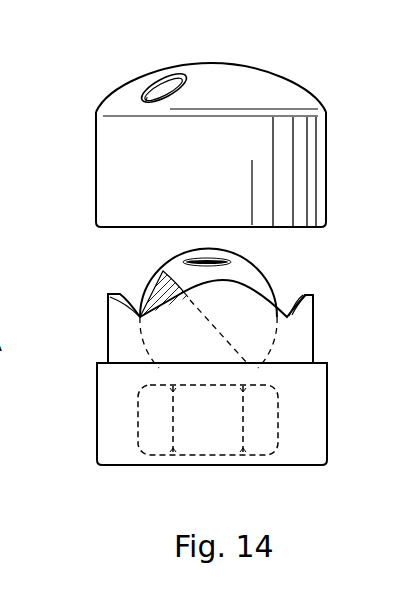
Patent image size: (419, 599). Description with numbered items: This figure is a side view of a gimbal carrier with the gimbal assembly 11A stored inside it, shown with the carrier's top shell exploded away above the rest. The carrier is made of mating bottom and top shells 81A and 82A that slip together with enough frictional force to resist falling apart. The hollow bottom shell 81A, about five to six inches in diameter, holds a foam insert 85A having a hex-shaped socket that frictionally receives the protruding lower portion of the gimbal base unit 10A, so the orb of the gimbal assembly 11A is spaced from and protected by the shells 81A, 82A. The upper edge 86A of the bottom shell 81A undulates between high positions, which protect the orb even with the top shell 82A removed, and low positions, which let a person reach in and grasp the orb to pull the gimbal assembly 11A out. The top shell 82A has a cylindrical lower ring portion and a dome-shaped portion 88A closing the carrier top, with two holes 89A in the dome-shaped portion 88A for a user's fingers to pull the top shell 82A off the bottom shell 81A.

The base unit 10A is at (214, 352).
The gimbal assembly 11A is at (263, 277).
The bottom shell 81A is at (331, 396).
The top shell 82A is at (313, 92).
The foam insert 85A is at (297, 425).
The upper edge 86A is at (313, 295).
The dome-shaped portion 88A is at (263, 72).
The holes 89A is at (162, 85).